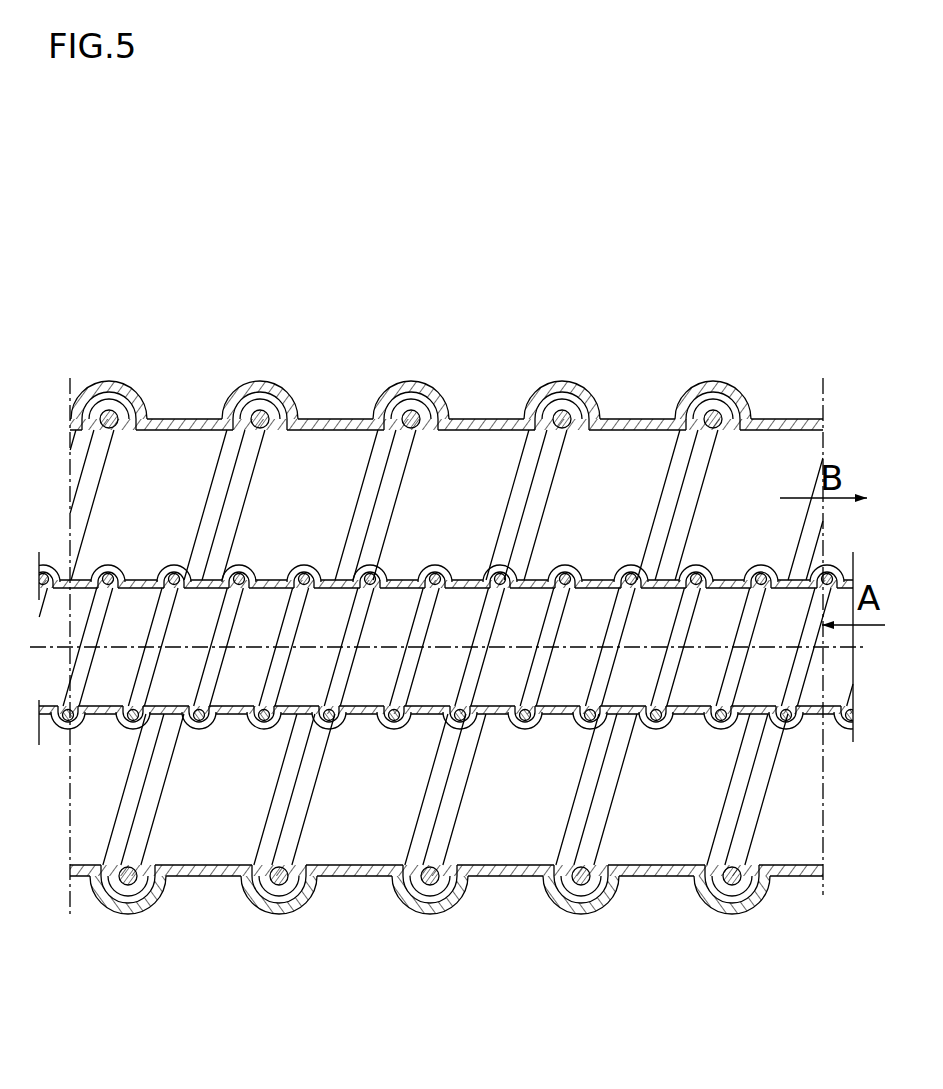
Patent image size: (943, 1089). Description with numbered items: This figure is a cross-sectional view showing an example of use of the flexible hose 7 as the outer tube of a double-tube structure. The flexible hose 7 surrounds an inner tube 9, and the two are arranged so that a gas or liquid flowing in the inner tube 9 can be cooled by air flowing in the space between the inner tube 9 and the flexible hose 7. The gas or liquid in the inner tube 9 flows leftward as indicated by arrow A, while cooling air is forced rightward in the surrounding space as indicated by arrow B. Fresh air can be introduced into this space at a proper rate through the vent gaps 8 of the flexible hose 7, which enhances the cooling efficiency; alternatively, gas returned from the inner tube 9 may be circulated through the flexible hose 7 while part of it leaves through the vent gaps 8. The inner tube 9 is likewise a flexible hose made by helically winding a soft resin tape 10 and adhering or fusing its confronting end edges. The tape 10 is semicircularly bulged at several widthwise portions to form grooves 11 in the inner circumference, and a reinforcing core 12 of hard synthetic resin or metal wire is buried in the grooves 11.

The flexible hose 7 is at (353, 387).
The vent gaps 8 is at (420, 392).
The inner tube 9 is at (93, 562).
The soft resin tape 10 is at (270, 580).
The grooves 11 is at (373, 588).
The reinforcing core 12 is at (436, 585).